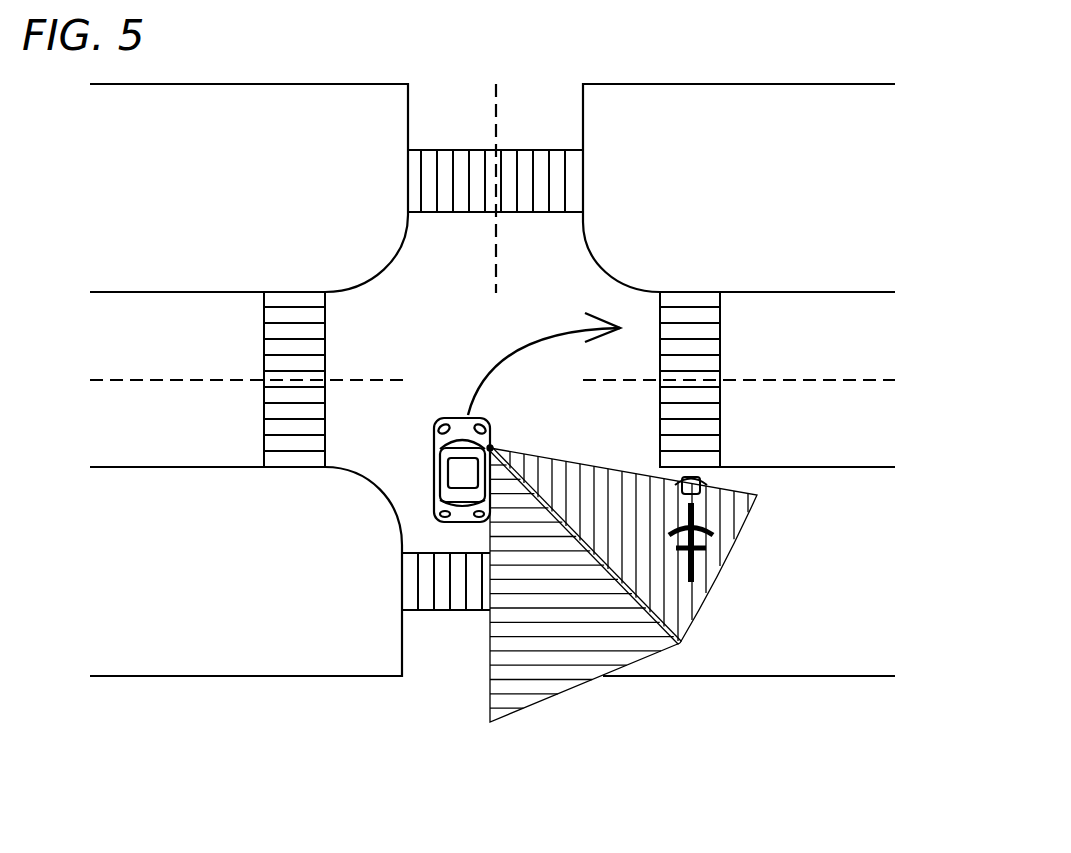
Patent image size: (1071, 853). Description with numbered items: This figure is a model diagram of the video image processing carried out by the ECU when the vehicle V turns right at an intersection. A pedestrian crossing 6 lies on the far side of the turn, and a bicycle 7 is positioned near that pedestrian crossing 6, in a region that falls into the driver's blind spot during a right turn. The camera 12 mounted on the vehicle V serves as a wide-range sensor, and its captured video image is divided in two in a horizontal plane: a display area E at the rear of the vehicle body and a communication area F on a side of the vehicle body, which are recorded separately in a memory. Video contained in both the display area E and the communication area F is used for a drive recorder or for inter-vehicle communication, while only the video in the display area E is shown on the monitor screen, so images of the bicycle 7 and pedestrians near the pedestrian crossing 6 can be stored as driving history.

The camera 12 is at (492, 445).
The pedestrian crossing 6 is at (722, 407).
The bicycle 7 is at (700, 572).
The vehicle V is at (434, 452).
The display area E is at (565, 654).
The communication area F is at (720, 515).